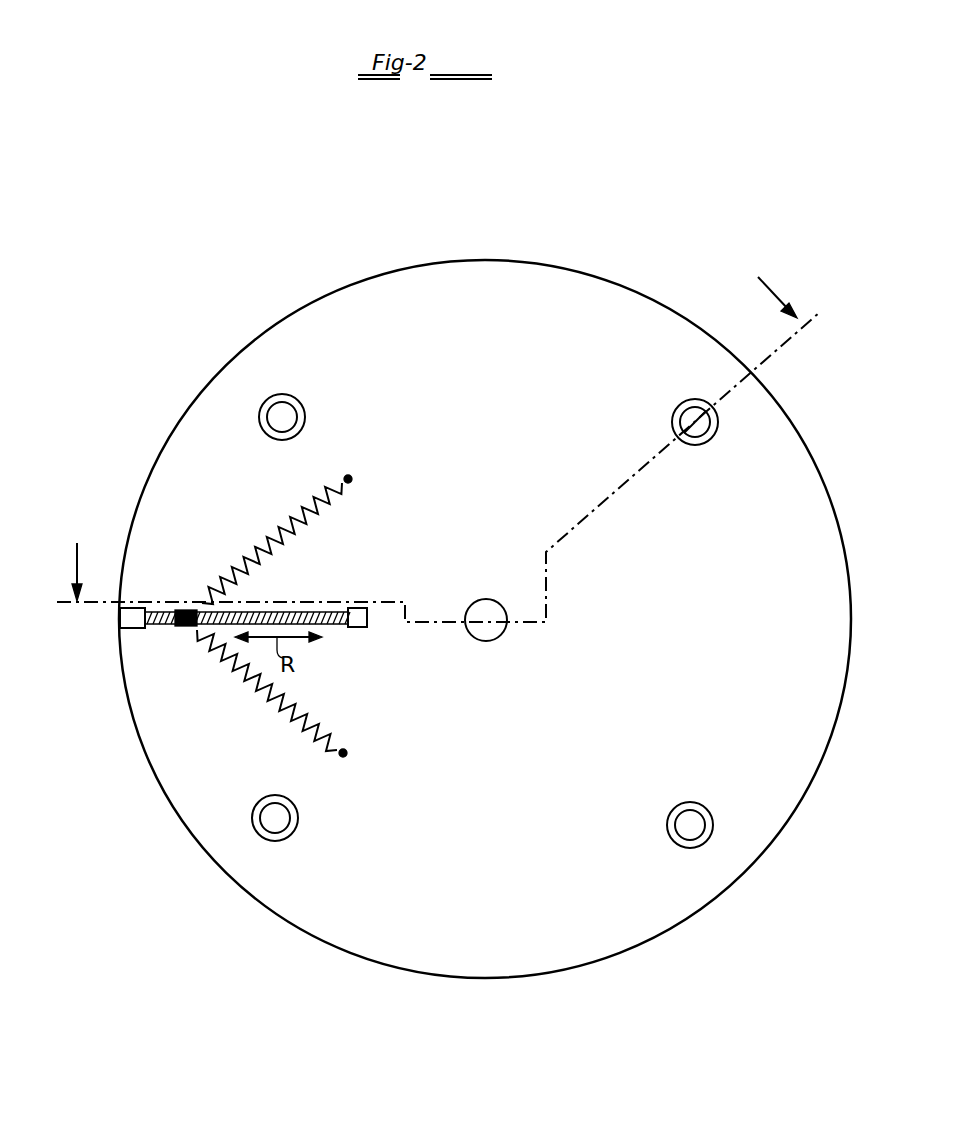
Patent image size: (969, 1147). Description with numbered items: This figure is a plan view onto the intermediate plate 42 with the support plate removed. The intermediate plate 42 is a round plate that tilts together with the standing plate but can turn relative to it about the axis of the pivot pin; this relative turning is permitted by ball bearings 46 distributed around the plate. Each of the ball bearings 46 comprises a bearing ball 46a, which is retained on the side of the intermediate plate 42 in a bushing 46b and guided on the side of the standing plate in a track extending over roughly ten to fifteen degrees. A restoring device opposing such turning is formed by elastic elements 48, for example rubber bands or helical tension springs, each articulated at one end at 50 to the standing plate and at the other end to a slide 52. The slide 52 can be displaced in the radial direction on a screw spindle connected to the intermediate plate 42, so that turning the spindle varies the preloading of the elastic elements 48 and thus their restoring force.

The intermediate plate 42 is at (522, 278).
The ball bearings 46 is at (282, 417).
The bearing balls 46a is at (712, 422).
The bushings 46b is at (678, 422).
The elastic elements 48 is at (262, 552).
The articulation point 50 is at (352, 477).
The slide 52 is at (180, 630).